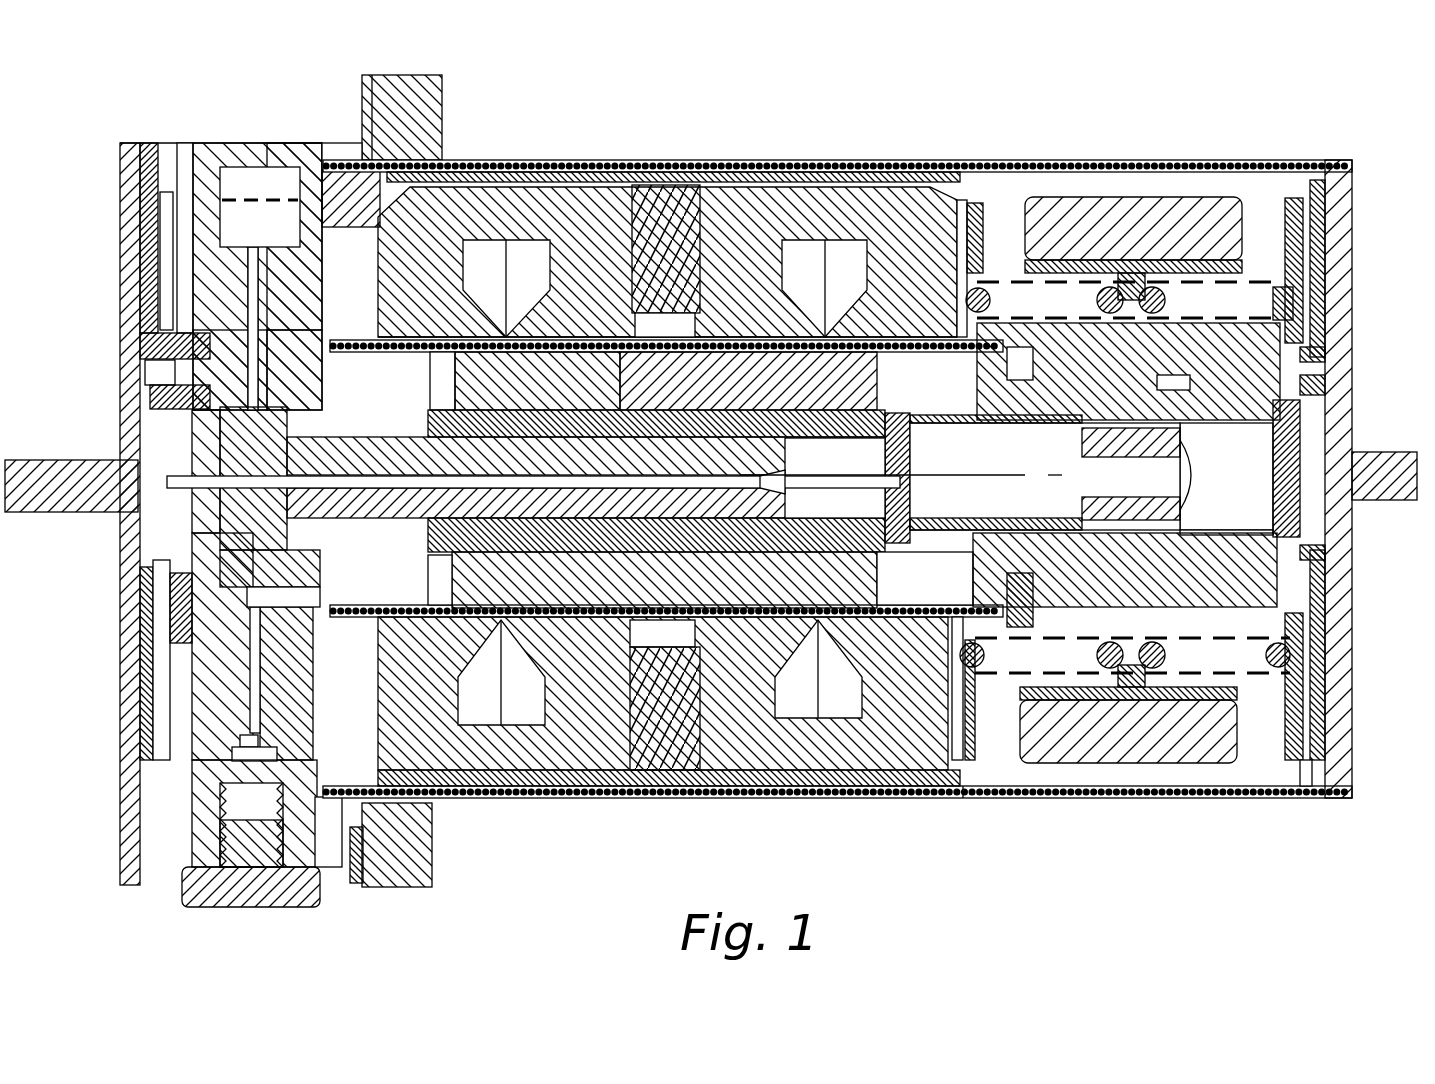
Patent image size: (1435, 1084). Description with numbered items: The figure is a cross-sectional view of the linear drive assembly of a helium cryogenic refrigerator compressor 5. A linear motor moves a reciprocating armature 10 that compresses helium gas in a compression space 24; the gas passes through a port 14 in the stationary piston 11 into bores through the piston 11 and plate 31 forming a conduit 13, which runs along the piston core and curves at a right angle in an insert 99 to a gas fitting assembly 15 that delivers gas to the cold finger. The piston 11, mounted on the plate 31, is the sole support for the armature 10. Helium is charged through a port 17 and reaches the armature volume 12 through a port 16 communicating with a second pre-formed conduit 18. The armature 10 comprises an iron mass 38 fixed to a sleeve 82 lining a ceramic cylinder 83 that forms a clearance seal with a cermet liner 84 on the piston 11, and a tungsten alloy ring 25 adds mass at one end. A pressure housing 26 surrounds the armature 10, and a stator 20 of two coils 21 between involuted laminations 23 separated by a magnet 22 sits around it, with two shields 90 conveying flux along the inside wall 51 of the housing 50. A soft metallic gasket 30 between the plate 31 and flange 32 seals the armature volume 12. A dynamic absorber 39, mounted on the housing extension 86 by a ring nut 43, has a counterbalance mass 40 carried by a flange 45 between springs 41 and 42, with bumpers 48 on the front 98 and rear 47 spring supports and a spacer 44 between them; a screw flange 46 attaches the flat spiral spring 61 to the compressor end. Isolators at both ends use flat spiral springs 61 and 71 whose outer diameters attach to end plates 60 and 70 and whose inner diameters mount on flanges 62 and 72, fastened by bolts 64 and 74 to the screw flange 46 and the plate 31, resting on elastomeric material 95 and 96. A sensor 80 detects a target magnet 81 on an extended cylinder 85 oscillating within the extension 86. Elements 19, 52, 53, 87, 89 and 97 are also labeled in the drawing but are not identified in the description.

The compressor 5 is at (1165, 815).
The armature 10 is at (882, 365).
The stationary piston 11 is at (304, 403).
The armature volume 12 is at (360, 587).
The conduit 13 is at (230, 328).
The port 14 is at (780, 486).
The gas fitting assembly 15 is at (275, 182).
The port 16 is at (330, 593).
The port 17 is at (250, 735).
The second pre-formed conduit 18 is at (210, 511).
The nut 19 is at (312, 905).
The stator 20 is at (773, 163).
The coils 21 is at (840, 258).
The magnet 22 is at (675, 198).
The involuted laminations 23 is at (513, 800).
The compression space 24 is at (862, 489).
The tungsten alloy ring 25 is at (440, 580).
The pressure housing 26 is at (905, 605).
The soft metallic gasket 30 is at (294, 236).
The plate 31 is at (231, 287).
The flange 32 is at (281, 683).
The iron mass 38 is at (547, 360).
The dynamic absorber 39 is at (1238, 188).
The counterbalance mass 40 is at (1120, 197).
The spring 41 is at (995, 300).
The spring 42 is at (1275, 290).
The ring nut 43 is at (1125, 556).
The spacer 44 is at (1038, 625).
The flange 45 is at (1238, 700).
The screw flange 46 is at (1295, 628).
The rear spring support 47 is at (1287, 762).
The bumpers 48 is at (980, 200).
The housing 50 is at (872, 800).
The inside wall 51 is at (770, 800).
The threaded fitting 52 is at (267, 813).
The seal 53 is at (236, 732).
The housing end plate 60 is at (1353, 255).
The flat spiral spring 61 is at (1330, 310).
The flange 62 is at (1305, 355).
The bolts 64 is at (1340, 385).
The housing end plate 70 is at (123, 265).
The flat spiral spring 71 is at (147, 340).
The flange 72 is at (148, 405).
The bolts 74 is at (130, 330).
The sensor 80 is at (1302, 445).
The target magnet 81 is at (1205, 475).
The sleeve 82 is at (430, 395).
The ceramic cylinder 83 is at (860, 440).
The cermet liner 84 is at (800, 440).
The extended cylinder 85 is at (1022, 432).
The housing extension 86 is at (1222, 526).
The rotor bar 87 is at (500, 391).
The rotor axis 89 is at (615, 395).
The shields 90 is at (700, 798).
The elastomeric material 95 is at (1320, 665).
The elastomeric material 96 is at (117, 690).
The shell seam 97 is at (965, 800).
The front spring support 98 is at (1006, 628).
The insert 99 is at (215, 513).